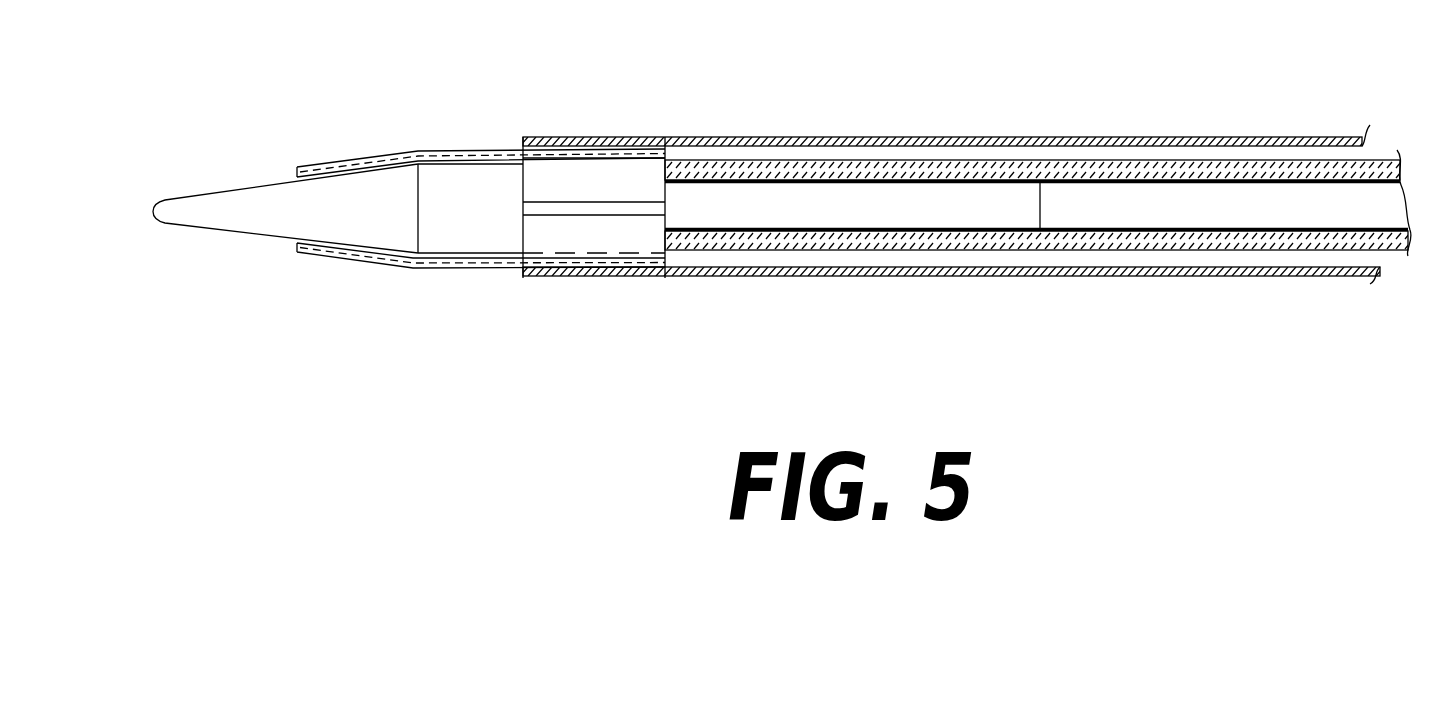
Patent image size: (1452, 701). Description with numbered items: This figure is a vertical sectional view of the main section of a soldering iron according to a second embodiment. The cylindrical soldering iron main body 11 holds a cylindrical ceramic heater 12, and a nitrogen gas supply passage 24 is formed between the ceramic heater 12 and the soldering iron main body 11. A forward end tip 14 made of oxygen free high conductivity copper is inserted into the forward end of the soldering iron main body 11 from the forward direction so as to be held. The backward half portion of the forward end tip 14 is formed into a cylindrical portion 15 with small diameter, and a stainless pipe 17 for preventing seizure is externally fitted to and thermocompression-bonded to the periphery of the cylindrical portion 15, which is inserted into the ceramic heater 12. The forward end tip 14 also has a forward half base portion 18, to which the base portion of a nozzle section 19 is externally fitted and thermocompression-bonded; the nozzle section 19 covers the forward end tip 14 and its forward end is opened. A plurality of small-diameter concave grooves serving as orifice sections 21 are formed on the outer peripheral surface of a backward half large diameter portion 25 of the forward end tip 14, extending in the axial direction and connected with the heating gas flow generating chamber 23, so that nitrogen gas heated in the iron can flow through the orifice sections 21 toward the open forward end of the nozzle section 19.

The soldering iron main body 11 is at (1118, 136).
The ceramic heater 12 is at (1261, 172).
The forward end tip 14 is at (253, 218).
The cylindrical portion 15 is at (838, 217).
The stainless pipe 17 is at (985, 233).
The forward half base portion 18 is at (450, 234).
The nozzle section 19 is at (357, 159).
The orifice sections 21 is at (594, 202).
The heating gas flow generating chamber 23 is at (715, 254).
The nitrogen gas supply passage 24 is at (1263, 254).
The backward half large diameter portion 25 is at (642, 168).